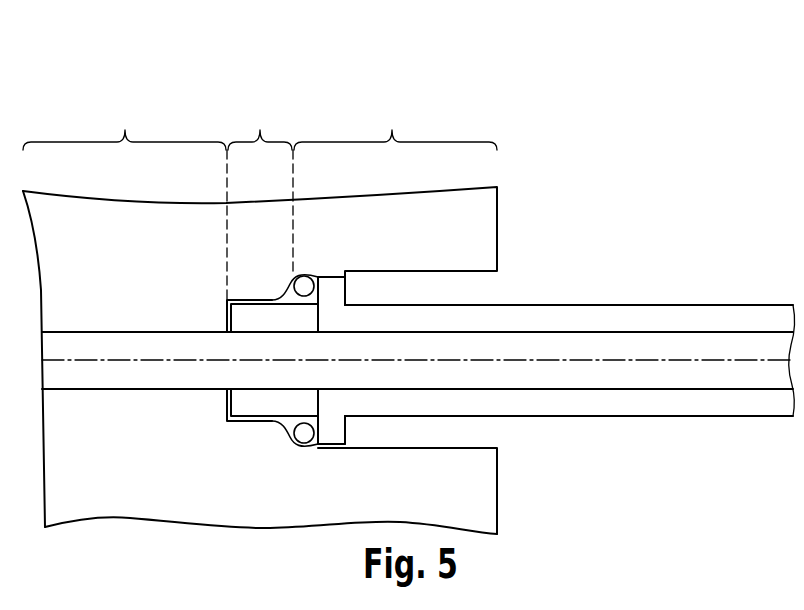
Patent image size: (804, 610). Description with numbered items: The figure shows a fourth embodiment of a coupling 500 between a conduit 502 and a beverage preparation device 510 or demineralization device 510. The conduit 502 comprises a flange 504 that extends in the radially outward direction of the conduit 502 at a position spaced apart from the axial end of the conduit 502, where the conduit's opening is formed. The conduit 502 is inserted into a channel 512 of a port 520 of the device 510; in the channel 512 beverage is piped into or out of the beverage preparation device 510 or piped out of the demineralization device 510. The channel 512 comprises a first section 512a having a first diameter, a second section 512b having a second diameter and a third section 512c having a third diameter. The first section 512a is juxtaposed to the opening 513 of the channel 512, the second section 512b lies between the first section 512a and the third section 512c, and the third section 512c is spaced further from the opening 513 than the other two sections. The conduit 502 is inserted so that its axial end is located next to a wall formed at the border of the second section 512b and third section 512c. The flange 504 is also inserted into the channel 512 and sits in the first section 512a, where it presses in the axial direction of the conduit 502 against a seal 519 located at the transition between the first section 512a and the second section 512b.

The connection assembly 500 is at (636, 60).
The conduit 502 is at (734, 322).
The flange 504 is at (337, 286).
The beverage preparation device or demineralization device 510 is at (483, 494).
The channel 512 is at (123, 340).
The first section 512a is at (395, 121).
The second section 512b is at (262, 182).
The third section 512c is at (125, 196).
The opening 513 is at (515, 287).
The seal 519 is at (296, 273).
The port 520 is at (522, 227).